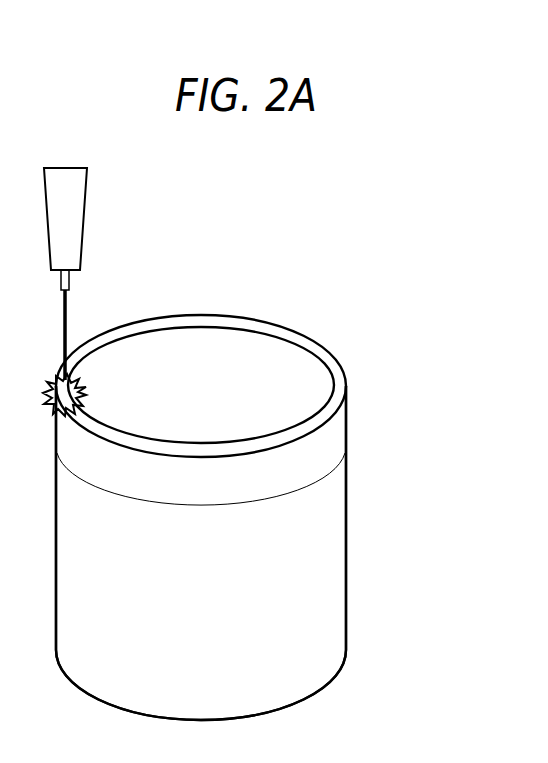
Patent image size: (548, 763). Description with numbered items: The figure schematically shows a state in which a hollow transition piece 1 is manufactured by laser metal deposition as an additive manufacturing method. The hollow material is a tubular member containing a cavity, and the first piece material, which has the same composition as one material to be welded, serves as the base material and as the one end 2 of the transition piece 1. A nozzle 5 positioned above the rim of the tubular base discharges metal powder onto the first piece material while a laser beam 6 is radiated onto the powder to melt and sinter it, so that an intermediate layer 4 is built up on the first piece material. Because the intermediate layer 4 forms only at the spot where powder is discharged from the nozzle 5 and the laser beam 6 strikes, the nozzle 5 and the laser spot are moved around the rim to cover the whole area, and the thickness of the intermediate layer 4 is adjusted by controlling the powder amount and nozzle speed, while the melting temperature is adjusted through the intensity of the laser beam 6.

The transition piece 1 is at (345, 287).
The one end 2 is at (343, 587).
The intermediate layer 4 is at (347, 416).
The nozzle 5 is at (88, 176).
The laser beam 6 is at (67, 323).